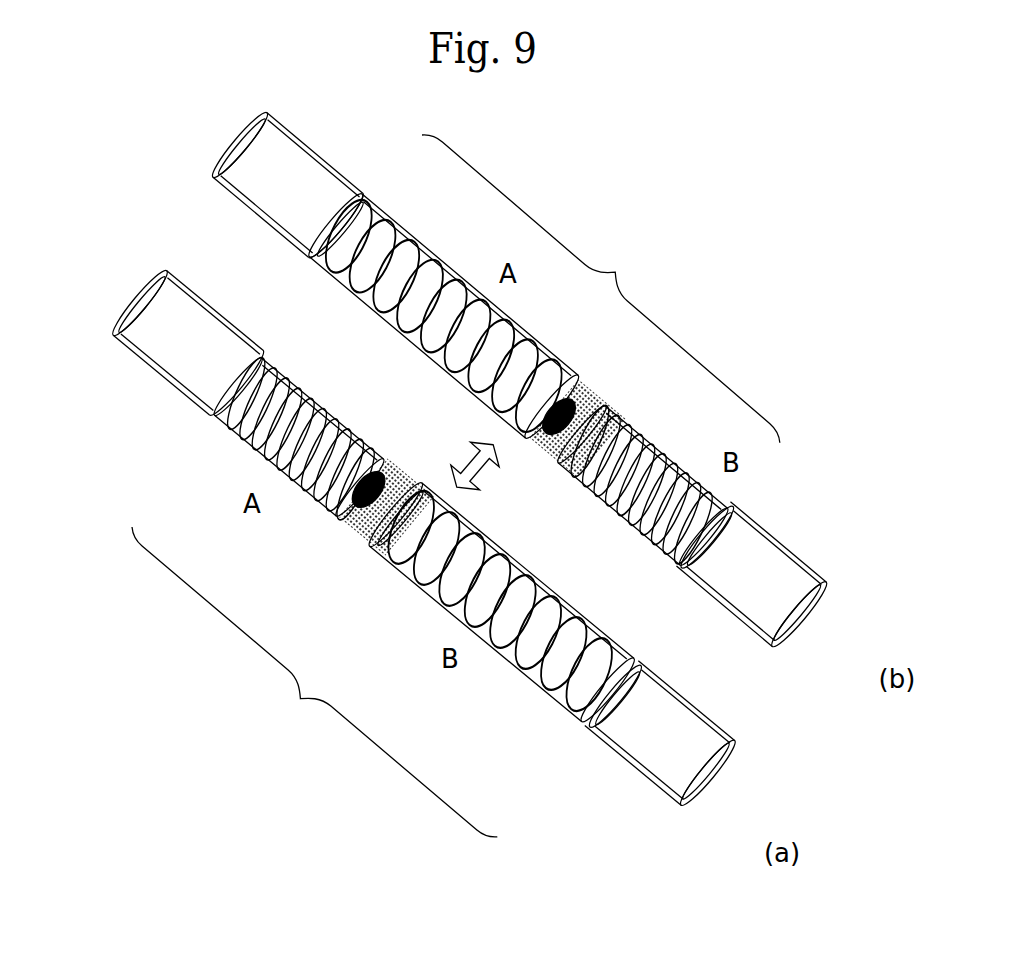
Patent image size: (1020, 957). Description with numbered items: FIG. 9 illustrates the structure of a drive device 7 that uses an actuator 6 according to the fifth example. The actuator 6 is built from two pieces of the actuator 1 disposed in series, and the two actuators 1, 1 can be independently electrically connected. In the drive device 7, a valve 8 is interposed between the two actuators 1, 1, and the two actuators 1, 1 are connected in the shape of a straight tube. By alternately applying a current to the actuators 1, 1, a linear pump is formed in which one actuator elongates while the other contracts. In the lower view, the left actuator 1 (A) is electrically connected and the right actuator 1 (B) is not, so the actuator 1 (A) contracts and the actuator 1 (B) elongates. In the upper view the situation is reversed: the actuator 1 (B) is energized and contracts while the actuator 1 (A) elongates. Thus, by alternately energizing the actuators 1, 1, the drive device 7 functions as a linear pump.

The actuator 1 is at (438, 242).
The actuator 6 is at (441, 470).
The drive device 7 is at (217, 143).
The valve 8 is at (577, 406).